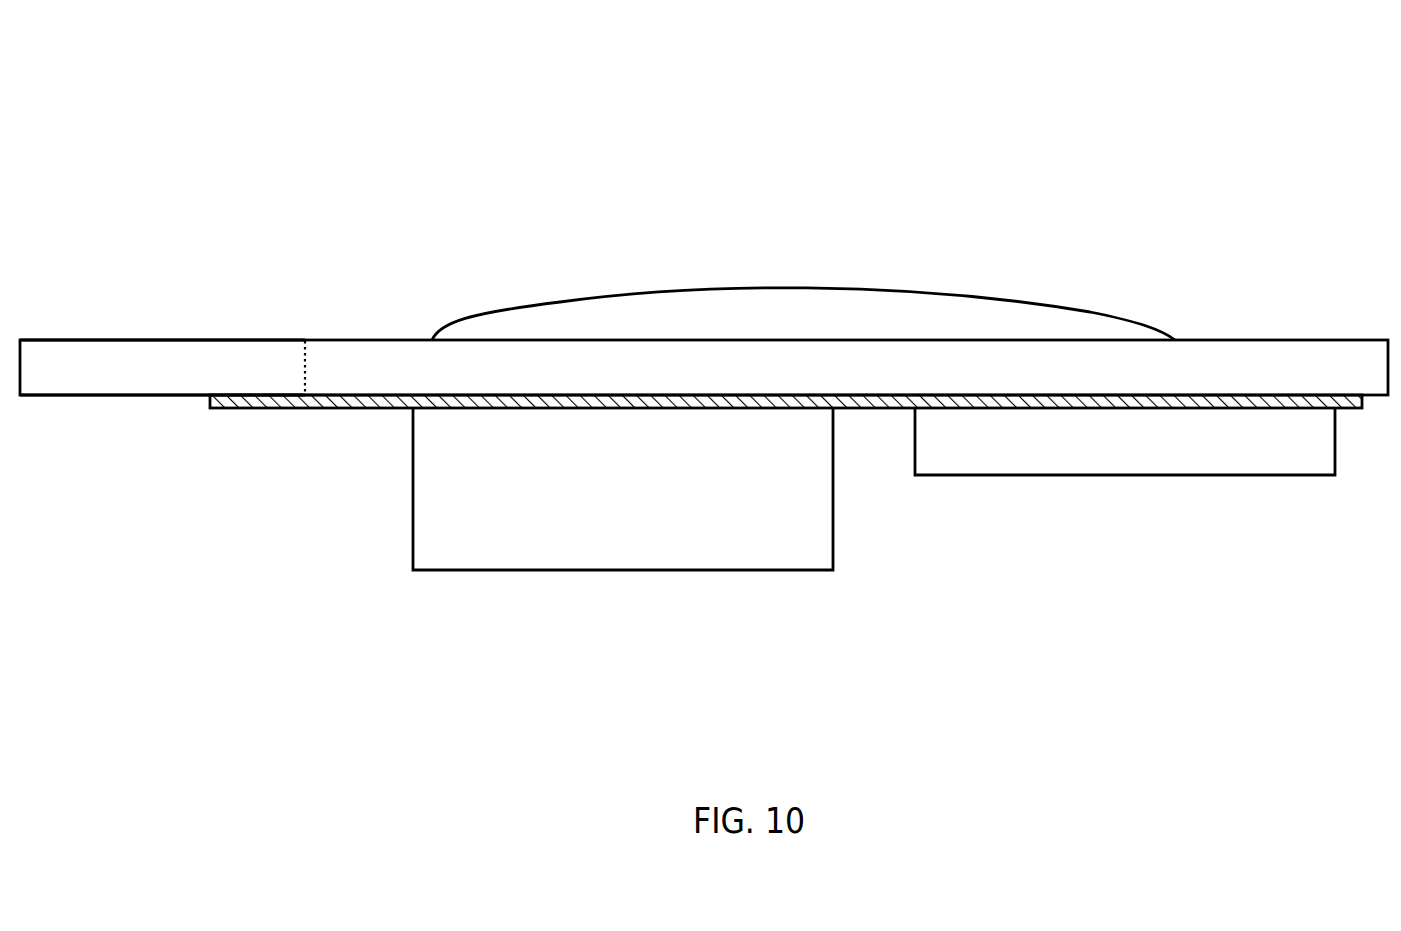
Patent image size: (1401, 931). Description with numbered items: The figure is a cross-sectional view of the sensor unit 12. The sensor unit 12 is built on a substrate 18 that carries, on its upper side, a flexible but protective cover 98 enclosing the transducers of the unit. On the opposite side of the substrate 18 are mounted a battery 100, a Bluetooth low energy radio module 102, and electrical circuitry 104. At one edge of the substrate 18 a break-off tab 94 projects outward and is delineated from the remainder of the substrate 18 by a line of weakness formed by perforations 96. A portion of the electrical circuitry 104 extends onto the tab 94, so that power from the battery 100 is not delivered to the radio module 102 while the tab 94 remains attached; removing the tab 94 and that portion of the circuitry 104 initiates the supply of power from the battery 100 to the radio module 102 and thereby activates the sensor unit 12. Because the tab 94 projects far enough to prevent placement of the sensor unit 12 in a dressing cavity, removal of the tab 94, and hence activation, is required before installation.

The sensor unit 12 is at (354, 104).
The substrate 18 is at (1237, 363).
The break-off tab 94 is at (242, 350).
The perforations 96 is at (306, 370).
The cover 98 is at (767, 308).
The battery 100 is at (594, 553).
The radio module 102 is at (1059, 465).
The electrical circuitry 104 is at (326, 410).